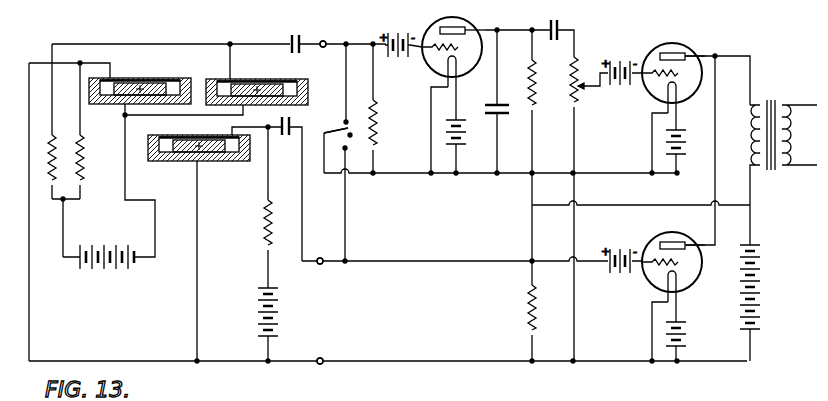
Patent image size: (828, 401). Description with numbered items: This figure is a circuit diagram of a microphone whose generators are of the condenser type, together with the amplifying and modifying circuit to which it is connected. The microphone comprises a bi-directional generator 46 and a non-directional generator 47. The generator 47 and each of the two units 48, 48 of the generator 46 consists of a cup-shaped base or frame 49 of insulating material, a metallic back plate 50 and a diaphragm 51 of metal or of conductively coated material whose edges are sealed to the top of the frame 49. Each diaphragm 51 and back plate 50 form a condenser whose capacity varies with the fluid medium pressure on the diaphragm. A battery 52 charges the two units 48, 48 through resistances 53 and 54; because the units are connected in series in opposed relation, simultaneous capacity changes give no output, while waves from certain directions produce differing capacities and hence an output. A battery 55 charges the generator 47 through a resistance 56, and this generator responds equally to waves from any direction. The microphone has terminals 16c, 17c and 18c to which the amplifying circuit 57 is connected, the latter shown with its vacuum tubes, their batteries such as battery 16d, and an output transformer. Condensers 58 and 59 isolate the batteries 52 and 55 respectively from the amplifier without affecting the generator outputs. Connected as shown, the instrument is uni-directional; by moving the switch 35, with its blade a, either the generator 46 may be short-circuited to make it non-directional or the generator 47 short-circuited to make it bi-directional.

The terminal 16c is at (324, 42).
The terminal 17c is at (322, 264).
The terminal 18c is at (322, 364).
The plate battery 16d is at (609, 315).
The switch 35 is at (330, 107).
The switch a is at (342, 126).
The bi-directional generator 46 is at (191, 80).
The non-directional generator 47 is at (162, 161).
The generator unit 48 is at (111, 78).
The cup-shaped base or frame 49 is at (89, 104).
The metallic back plate 50 is at (155, 73).
The diaphragm 51 is at (172, 79).
The battery 52 is at (100, 270).
The resistance 53 is at (82, 186).
The resistance 54 is at (48, 187).
The battery 55 is at (278, 314).
The resistance 56 is at (262, 249).
The amplifying circuit 57 is at (526, 209).
The condenser 58 is at (288, 36).
The condenser 59 is at (285, 138).